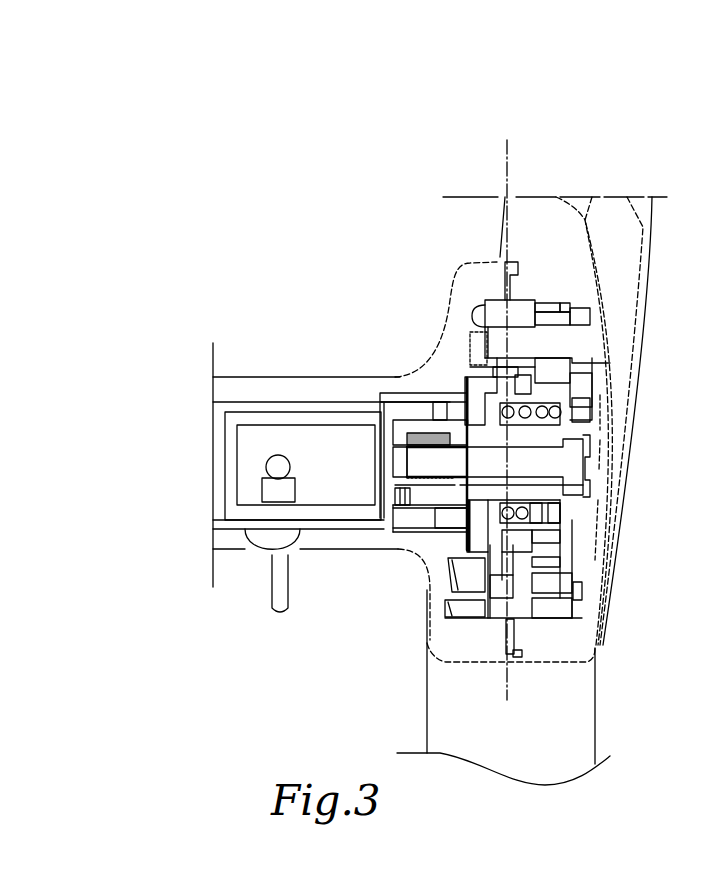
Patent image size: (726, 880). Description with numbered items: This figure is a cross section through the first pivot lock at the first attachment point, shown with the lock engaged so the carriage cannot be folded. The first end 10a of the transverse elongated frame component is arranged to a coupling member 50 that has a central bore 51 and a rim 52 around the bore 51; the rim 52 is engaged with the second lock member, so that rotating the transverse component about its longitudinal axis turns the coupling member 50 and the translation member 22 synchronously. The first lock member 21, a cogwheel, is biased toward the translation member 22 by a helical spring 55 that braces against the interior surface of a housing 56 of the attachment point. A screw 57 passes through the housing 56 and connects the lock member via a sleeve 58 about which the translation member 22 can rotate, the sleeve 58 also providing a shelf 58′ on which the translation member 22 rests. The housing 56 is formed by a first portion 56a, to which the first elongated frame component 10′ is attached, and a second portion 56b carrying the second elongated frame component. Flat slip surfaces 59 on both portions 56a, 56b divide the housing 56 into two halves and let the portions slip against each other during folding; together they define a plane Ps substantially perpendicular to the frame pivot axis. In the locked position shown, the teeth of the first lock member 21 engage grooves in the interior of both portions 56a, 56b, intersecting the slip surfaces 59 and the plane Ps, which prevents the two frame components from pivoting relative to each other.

The first elongated frame component 10′ is at (617, 252).
The first end 10a is at (356, 377).
The first lock member 21 is at (513, 359).
The translation member 22 is at (468, 382).
The coupling member 50 is at (393, 518).
The central bore 51 is at (433, 487).
The rim 52 is at (407, 405).
The helical spring 55 is at (548, 508).
The housing 56 is at (613, 617).
The first portion 56a is at (588, 576).
The second portion 56b is at (450, 633).
The screw 57 is at (581, 466).
The sleeve 58 is at (540, 436).
The shelf 58′ is at (485, 425).
The slip surface 59 is at (512, 650).
The plane Ps is at (509, 152).